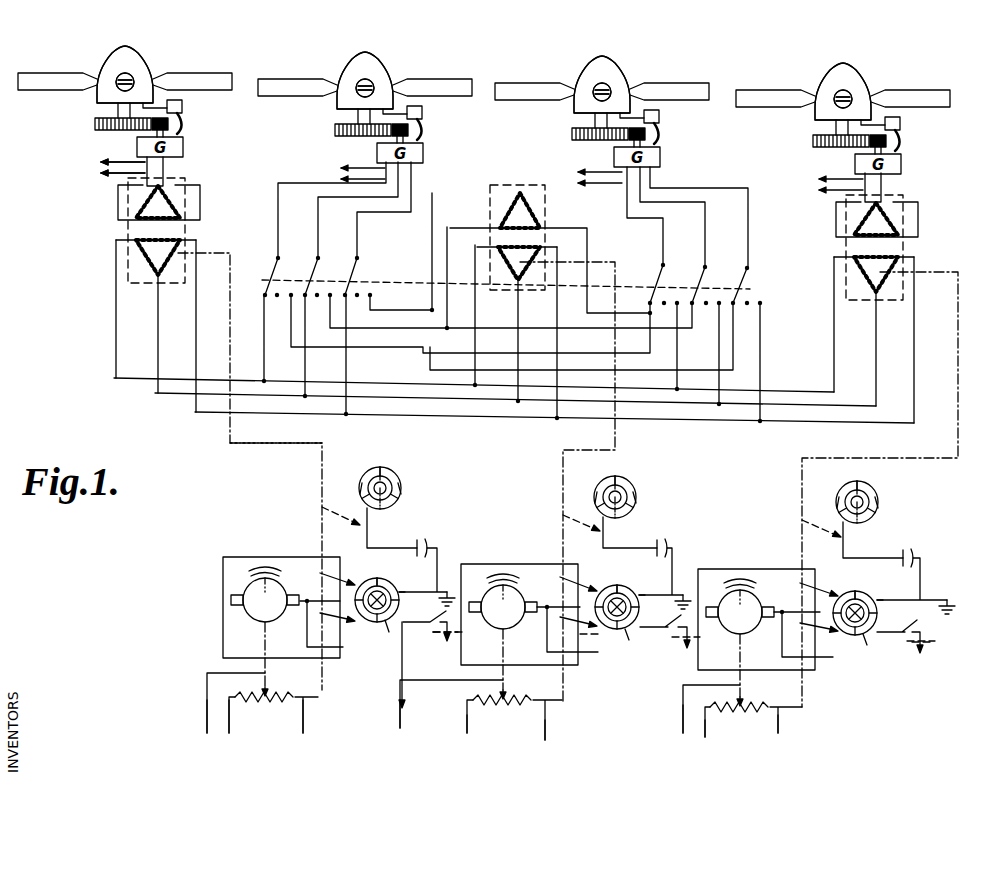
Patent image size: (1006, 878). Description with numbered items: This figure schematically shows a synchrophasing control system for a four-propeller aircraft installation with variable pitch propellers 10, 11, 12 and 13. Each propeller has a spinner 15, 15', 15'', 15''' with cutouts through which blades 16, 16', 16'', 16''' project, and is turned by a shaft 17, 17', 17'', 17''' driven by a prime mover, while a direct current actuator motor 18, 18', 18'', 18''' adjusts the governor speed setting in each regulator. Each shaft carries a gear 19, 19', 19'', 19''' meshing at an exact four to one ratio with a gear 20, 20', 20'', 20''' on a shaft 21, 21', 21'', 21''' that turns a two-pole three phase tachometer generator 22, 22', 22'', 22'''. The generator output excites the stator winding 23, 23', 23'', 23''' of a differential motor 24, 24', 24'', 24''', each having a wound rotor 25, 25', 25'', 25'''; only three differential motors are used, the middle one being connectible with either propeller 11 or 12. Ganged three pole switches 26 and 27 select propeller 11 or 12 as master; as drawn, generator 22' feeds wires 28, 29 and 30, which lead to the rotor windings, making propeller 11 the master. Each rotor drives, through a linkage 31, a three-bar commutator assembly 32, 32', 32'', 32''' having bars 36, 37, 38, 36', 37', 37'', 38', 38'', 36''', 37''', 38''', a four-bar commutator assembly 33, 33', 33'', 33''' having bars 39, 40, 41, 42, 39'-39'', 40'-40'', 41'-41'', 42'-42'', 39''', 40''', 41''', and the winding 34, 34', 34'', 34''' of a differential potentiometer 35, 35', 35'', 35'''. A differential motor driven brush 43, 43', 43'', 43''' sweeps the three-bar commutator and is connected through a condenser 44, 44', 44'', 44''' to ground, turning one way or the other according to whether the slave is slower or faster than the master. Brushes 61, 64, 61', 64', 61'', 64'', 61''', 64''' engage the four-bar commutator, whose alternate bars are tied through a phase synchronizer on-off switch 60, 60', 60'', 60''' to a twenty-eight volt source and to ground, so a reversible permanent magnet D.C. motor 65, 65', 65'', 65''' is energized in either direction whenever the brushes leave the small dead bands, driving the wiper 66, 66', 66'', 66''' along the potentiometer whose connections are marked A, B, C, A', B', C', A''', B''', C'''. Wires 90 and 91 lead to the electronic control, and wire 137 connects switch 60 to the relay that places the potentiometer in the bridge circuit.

The variable pitch propeller 10 is at (113, 57).
The variable pitch propeller 11 is at (353, 60).
The variable pitch propeller 12 is at (597, 66).
The variable pitch propeller 13 is at (834, 70).
The spinner 15 is at (134, 70).
The blades 16 is at (125, 71).
The shaft 17 is at (100, 106).
The direct current actuator motor 18 is at (188, 114).
The gear 19 is at (104, 129).
The gear 20 is at (184, 135).
The shaft 21 is at (130, 140).
The tachometer generator 22 is at (177, 161).
The stator winding 23 is at (138, 202).
The differential motor 24 is at (132, 230).
The rotor 25 is at (138, 257).
The switch 26 is at (265, 280).
The switch 27 is at (703, 288).
The wire 28 is at (248, 380).
The wire 29 is at (247, 397).
The wire 30 is at (300, 415).
The linkage 31 is at (277, 450).
The odd number bar commutator assembly 32 is at (369, 481).
The even number bar commutator assembly 33 is at (382, 586).
The winding 34 is at (296, 715).
The differential potentiometer 35 is at (243, 715).
The commutator bar 36 is at (394, 458).
The commutator bar 37 is at (421, 484).
The commutator bar 38 is at (344, 495).
The commutator bar 39 is at (388, 556).
The commutator bar 40 is at (414, 580).
The commutator bar 41 is at (378, 635).
The commutator bar 42 is at (335, 635).
The brush 43 is at (341, 526).
The condenser 44 is at (411, 557).
The phase synchronizer on-off switch 60 is at (430, 634).
The brush 61 is at (344, 568).
The brush 64 is at (338, 628).
The permanent magnet field D.C. motor 65 is at (281, 607).
The wiper 66 is at (255, 677).
The wire 90 is at (101, 173).
The wire 91 is at (101, 162).
The wire 137 is at (400, 672).
The terminal A is at (204, 727).
The terminal B is at (227, 727).
The terminal C is at (297, 727).
The spinner 15' is at (377, 75).
The blades 16' is at (365, 74).
The shaft 17' is at (335, 111).
The direct current actuator motor 18' is at (427, 118).
The gear 19' is at (341, 130).
The gear 20' is at (429, 142).
The shaft 21' is at (370, 143).
The tachometer generator 22' is at (372, 200).
The spinner 15'' is at (617, 78).
The blades 16'' is at (602, 79).
The shaft 17'' is at (573, 114).
The direct current actuator motor 18'' is at (666, 121).
The gear 19'' is at (579, 133).
The gear 20'' is at (670, 145).
The shaft 21'' is at (610, 150).
The tachometer generator 22'' is at (663, 207).
The stator winding 23' is at (550, 232).
The stator winding 23'' is at (550, 253).
The differential motor 24' is at (547, 237).
The differential motor 24'' is at (517, 237).
The rotor 25' is at (558, 252).
The rotor 25'' is at (517, 263).
The spinner 15''' is at (862, 85).
The blades 16''' is at (843, 84).
The shaft 17''' is at (815, 123).
The direct current actuator motor 18''' is at (905, 127).
The gear 19''' is at (821, 138).
The gear 20''' is at (910, 148).
The shaft 21''' is at (849, 157).
The tachometer generator 22''' is at (885, 178).
The stator winding 23''' is at (903, 219).
The differential motor 24''' is at (847, 247).
The rotor 25''' is at (905, 269).
The odd number bar commutator assembly 32' is at (639, 482).
The odd number bar commutator assembly 32'' is at (615, 497).
The even number bar commutator assembly 33' is at (612, 646).
The even number bar commutator assembly 33'' is at (617, 607).
The winding 34' is at (536, 728).
The winding 34'' is at (547, 720).
The differential potentiometer 35' is at (487, 728).
The differential potentiometer 35'' is at (470, 716).
The commutator bar 36' is at (592, 479).
The commutator bar 37' is at (667, 493).
The commutator bar 37'' is at (634, 497).
The commutator bar 38' is at (563, 508).
The commutator bar 38'' is at (596, 497).
The commutator bar 39'-39'' is at (633, 575).
The commutator bar 40'-40'' is at (710, 571).
The commutator bar 41'-41'' is at (658, 666).
The commutator bar 42'-42'' is at (601, 670).
The brush 43' is at (605, 538).
The brush 43'' is at (582, 524).
The condenser 44' is at (667, 562).
The condenser 44'' is at (647, 563).
The phase synchronizer on-off switch 60' is at (666, 644).
The phase synchronizer on-off switch 60'' is at (670, 631).
The brush 61' is at (578, 560).
The brush 61'' is at (579, 585).
The brush 64' is at (573, 687).
The brush 64'' is at (579, 623).
The permanent magnet field D.C. motor 65' is at (519, 595).
The permanent magnet field D.C. motor 65'' is at (519, 614).
The wiper 66' is at (473, 678).
The wiper 66'' is at (465, 678).
The terminal A A' is at (412, 733).
The terminal B B' is at (453, 746).
The terminal C C' is at (532, 765).
The odd number bar commutator assembly 32''' is at (845, 493).
The even number bar commutator assembly 33''' is at (856, 647).
The winding 34''' is at (776, 726).
The differential potentiometer 35''' is at (727, 726).
The commutator bar 36''' is at (878, 474).
The commutator bar 37''' is at (903, 494).
The commutator bar 38''' is at (821, 508).
The commutator bar 39''' is at (875, 579).
The commutator bar 40''' is at (893, 587).
The commutator bar 41''' is at (893, 664).
The brush 43''' is at (848, 534).
The condenser 44''' is at (906, 568).
The phase synchronizer on-off switch 60''' is at (906, 643).
The brush 61''' is at (833, 579).
The brush 64''' is at (832, 643).
The permanent magnet field D.C. motor 65''' is at (756, 619).
The wiper 66''' is at (737, 683).
The terminal A A''' is at (688, 729).
The terminal B B''' is at (706, 747).
The terminal C C''' is at (800, 737).